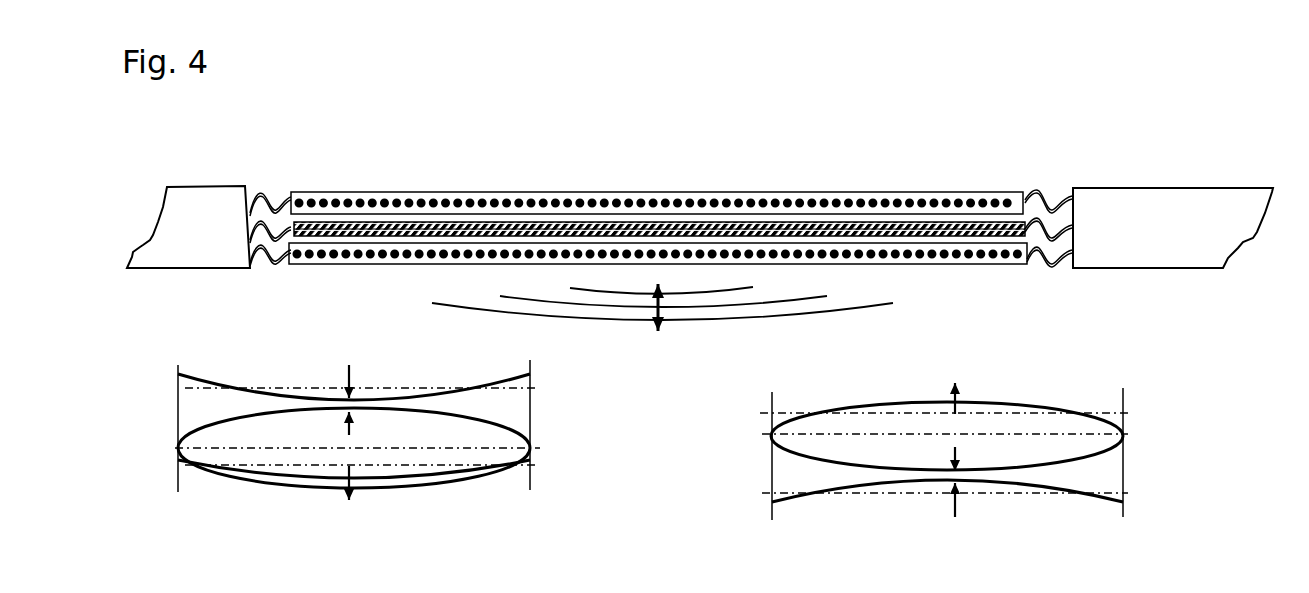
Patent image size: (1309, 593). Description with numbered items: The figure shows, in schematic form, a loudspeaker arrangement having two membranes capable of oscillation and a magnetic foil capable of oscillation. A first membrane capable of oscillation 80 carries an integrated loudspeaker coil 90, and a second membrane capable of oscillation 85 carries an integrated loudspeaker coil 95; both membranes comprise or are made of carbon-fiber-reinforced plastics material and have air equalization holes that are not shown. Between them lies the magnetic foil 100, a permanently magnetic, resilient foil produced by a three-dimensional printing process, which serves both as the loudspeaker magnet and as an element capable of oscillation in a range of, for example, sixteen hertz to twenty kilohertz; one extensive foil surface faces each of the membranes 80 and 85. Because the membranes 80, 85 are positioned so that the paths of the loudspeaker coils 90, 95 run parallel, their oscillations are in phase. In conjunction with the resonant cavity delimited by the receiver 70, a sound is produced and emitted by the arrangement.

The receiver 70 is at (187, 183).
The first membrane capable of oscillation 80 is at (1015, 270).
The second membrane capable of oscillation 85 is at (1000, 190).
The loudspeaker coil 90 is at (880, 259).
The loudspeaker coil 95 is at (867, 199).
The magnetic foil capable of oscillation 100 is at (304, 217).